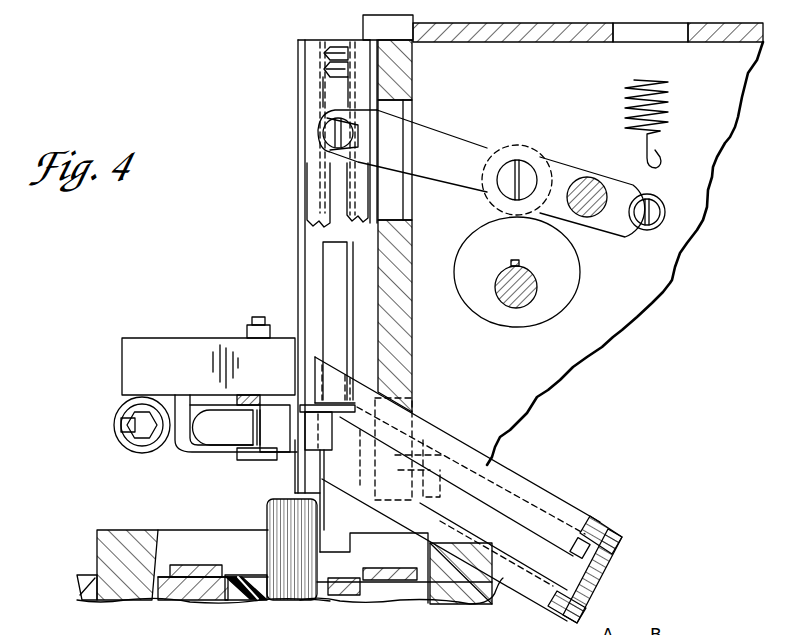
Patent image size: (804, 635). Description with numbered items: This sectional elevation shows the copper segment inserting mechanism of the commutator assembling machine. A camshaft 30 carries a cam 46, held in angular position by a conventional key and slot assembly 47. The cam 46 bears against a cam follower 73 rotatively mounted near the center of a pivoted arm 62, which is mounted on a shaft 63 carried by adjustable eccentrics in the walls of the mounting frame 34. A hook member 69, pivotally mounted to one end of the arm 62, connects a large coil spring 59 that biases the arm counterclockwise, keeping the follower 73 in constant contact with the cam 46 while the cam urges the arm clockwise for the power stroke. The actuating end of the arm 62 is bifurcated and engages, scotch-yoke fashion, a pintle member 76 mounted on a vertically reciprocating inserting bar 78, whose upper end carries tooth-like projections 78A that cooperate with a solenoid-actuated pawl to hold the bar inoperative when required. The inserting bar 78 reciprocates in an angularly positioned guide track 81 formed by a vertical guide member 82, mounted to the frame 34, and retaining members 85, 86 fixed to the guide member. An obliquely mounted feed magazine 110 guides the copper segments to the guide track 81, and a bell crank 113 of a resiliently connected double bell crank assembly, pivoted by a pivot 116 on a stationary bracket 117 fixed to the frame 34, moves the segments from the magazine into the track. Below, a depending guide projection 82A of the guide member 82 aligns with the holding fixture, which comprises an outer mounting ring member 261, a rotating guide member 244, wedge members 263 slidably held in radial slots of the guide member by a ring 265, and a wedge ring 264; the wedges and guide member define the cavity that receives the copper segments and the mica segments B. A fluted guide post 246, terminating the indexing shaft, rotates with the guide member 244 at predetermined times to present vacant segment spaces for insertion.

The mounting frame 34 is at (655, 290).
The retaining member 86 is at (318, 166).
The retaining member 85 is at (362, 192).
The tooth-like projections 78A is at (333, 68).
The vertical guide member 82 is at (300, 220).
The inserting bar 78 is at (335, 258).
The pivoted arm 62 is at (450, 152).
The pintle member 76 is at (328, 125).
The cam follower 73 is at (515, 148).
The shaft 63 is at (588, 178).
The hook member 69 is at (650, 183).
The coil spring 59 is at (672, 115).
The cam 46 is at (567, 262).
The key and slot assembly 47 is at (513, 262).
The camshaft 30 is at (527, 294).
The stationary bracket 117 is at (157, 340).
The pivot 116 is at (258, 318).
The bell crank 113 is at (267, 427).
The guide track 81 is at (337, 497).
The feed magazine 110 is at (610, 530).
The depending guide projection 82A is at (343, 535).
The wedge members 263 is at (393, 598).
The wedge ring 264 is at (128, 530).
The outer mounting ring member 261 is at (82, 572).
The rotating guide member 244 is at (196, 590).
The ring 265 is at (185, 555).
The guide post 246 is at (272, 520).
The mica segments B is at (245, 572).